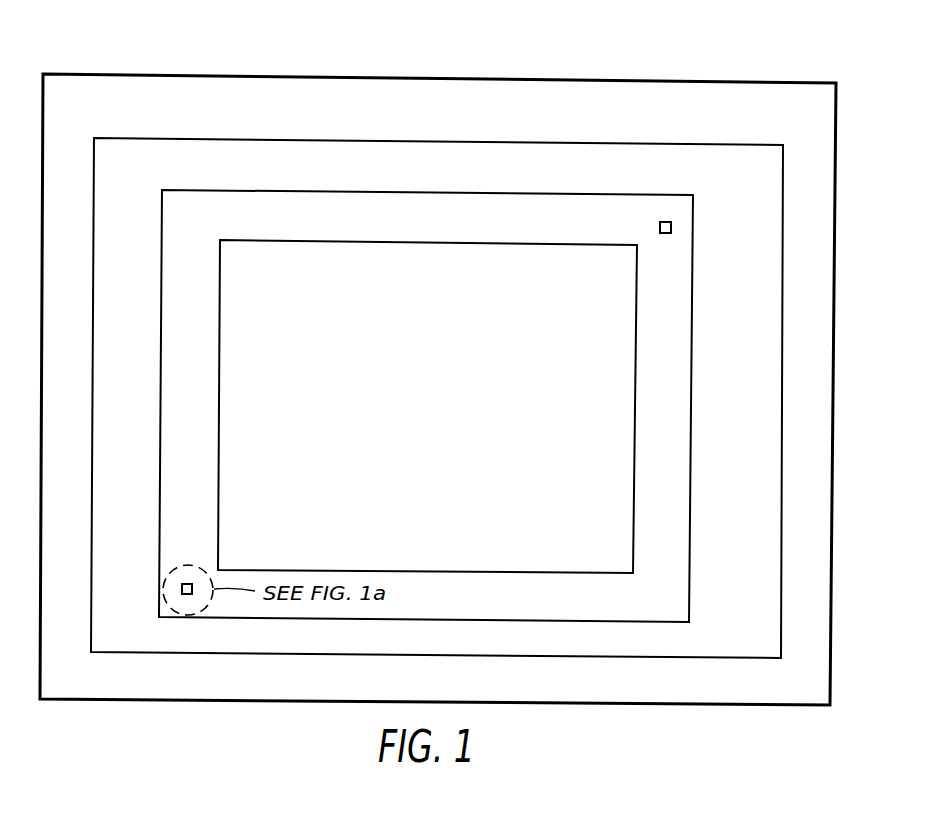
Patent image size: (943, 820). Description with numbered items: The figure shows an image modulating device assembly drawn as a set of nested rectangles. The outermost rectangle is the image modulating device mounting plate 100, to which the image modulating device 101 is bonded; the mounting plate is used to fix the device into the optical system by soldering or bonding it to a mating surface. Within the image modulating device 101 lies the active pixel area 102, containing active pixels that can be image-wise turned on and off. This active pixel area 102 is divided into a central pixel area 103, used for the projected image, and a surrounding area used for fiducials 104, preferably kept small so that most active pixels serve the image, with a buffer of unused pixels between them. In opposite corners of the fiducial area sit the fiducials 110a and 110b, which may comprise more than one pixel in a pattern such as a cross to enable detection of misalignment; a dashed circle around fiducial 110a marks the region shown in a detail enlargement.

The image modulating device mounting plate 100 is at (622, 80).
The image modulating device 101 is at (196, 138).
The active pixel area 102 is at (365, 192).
The central pixel area 103 is at (540, 243).
The surrounding area for fiducials 104 is at (183, 319).
The fiducial 110a is at (190, 582).
The fiducial 110b is at (672, 226).